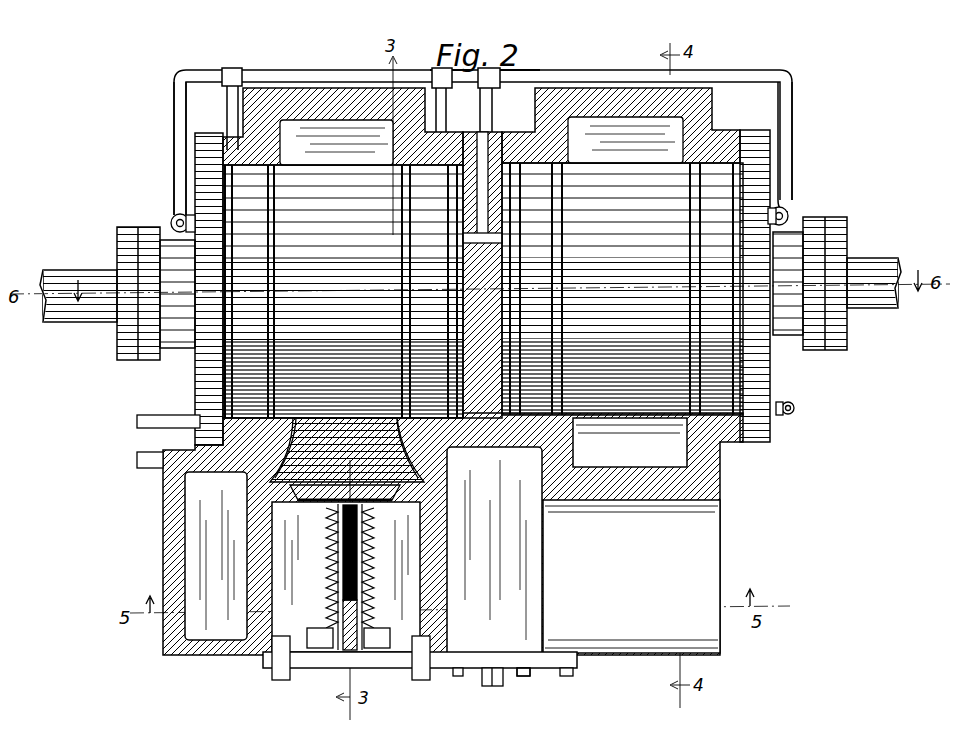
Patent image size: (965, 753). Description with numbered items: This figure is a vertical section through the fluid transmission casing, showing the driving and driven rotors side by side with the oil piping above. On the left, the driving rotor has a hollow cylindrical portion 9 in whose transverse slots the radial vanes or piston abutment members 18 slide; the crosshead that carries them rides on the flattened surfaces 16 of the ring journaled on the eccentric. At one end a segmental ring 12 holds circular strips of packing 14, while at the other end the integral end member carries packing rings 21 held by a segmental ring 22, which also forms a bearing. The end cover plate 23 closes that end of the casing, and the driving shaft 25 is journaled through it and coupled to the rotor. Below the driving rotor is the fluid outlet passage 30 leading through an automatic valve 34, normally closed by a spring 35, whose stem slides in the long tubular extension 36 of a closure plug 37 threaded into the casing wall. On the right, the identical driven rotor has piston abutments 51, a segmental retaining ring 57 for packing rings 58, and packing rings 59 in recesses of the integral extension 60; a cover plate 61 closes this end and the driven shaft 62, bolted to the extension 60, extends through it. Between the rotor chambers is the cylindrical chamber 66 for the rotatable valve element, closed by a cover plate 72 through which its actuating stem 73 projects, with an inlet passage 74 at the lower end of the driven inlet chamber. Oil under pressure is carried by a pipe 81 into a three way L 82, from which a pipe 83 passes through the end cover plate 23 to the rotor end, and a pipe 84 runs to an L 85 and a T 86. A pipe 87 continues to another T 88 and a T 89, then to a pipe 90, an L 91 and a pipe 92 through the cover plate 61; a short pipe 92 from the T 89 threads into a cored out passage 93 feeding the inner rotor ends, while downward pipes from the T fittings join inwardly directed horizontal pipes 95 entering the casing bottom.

The hollow cylindrical portion 9 is at (343, 291).
The segmental ring 12 is at (432, 250).
The packing 14 is at (383, 320).
The flattened surfaces 16 is at (300, 158).
The radial vanes or piston abutment members 18 is at (389, 273).
The packing rings 21 is at (227, 287).
The segmental ring 22 is at (236, 170).
The end cover plate 23 is at (202, 381).
The driving shaft 25 is at (78, 312).
The fluid outlet passage 30 is at (345, 480).
The automatic valve 34 is at (310, 496).
The spring 35 is at (330, 510).
The tubular extension 36 is at (360, 598).
The closure plug 37 is at (318, 660).
The piston abutments 51 is at (774, 238).
The segmental retaining ring 57 is at (543, 271).
The packing rings 58 is at (556, 163).
The packing rings 59 is at (740, 250).
The integral extension 60 is at (746, 248).
The cover plate 61 is at (778, 391).
The driven shaft 62 is at (872, 270).
The cylindrical chamber 66 is at (494, 552).
The cover plate 72 is at (544, 666).
The actuating stem 73 is at (480, 687).
The inlet passage 74 is at (198, 487).
The pipe 81 is at (168, 216).
The three way L 82 is at (176, 216).
The pipe 83 is at (195, 250).
The pipe 84 is at (175, 172).
The L 85 is at (174, 80).
The T 86 is at (241, 78).
The pipe 87 is at (356, 80).
The T 88 is at (432, 76).
The T 89 is at (496, 88).
The pipe 90 is at (789, 135).
The L 91 is at (785, 210).
The pipe 92 is at (486, 123).
The cored out passage 93 is at (486, 228).
The horizontal pipes 95 is at (228, 112).